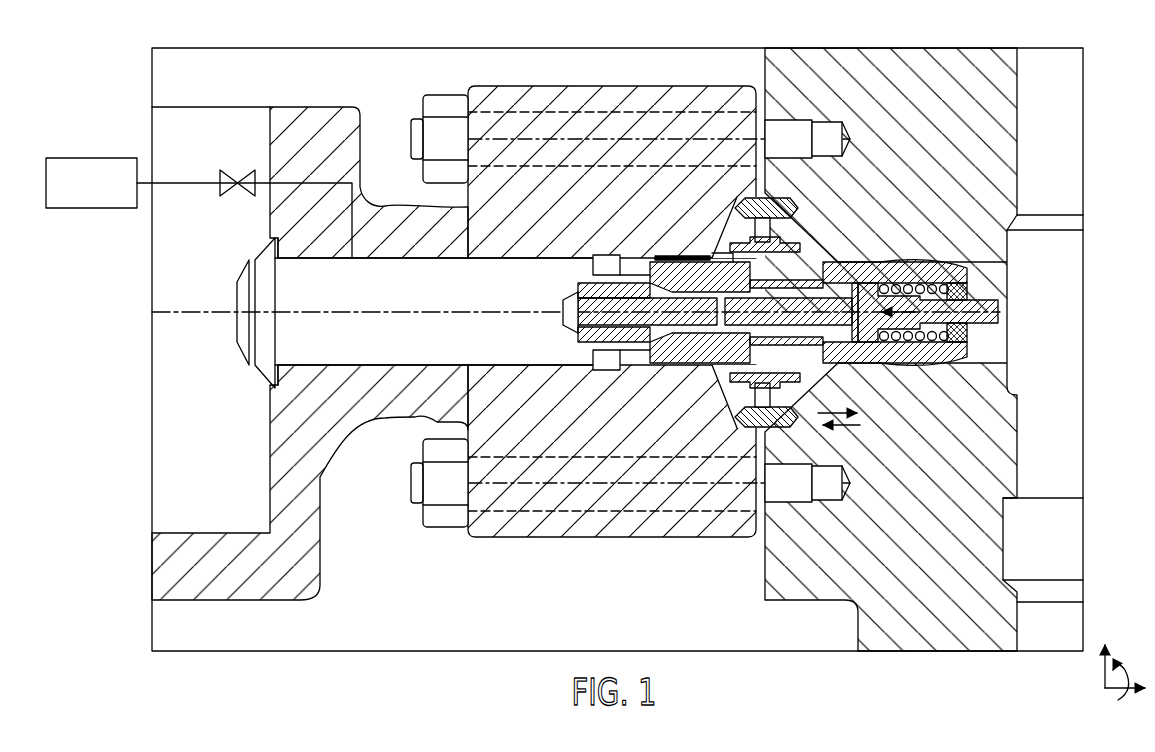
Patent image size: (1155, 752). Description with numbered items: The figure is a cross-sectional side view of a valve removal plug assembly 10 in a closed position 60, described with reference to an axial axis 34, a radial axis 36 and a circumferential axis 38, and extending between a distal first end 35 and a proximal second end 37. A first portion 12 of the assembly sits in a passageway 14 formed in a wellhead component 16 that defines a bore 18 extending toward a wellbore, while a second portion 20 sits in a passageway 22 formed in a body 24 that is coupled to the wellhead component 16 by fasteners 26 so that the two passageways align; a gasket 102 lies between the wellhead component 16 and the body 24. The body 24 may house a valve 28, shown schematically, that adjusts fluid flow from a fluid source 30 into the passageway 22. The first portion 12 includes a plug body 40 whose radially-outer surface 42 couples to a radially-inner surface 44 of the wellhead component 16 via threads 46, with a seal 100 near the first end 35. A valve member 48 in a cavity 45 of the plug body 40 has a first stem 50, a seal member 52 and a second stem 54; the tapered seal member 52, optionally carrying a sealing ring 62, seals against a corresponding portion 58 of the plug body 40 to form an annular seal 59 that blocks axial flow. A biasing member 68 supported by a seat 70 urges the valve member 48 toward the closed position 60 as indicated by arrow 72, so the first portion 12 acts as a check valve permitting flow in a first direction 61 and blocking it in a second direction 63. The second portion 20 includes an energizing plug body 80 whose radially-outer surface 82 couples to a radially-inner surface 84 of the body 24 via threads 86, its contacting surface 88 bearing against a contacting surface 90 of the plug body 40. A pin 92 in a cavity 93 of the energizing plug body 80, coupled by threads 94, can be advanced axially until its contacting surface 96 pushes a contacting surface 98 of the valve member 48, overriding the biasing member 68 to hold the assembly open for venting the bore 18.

The valve removal (VR) plug assembly 10 is at (893, 160).
The first portion 12 is at (897, 190).
The passageway 14 is at (965, 268).
The wellhead component 16 is at (903, 55).
The bore 18 is at (1058, 140).
The second portion 20 is at (655, 257).
The passageway 22 is at (486, 256).
The body 24 is at (368, 213).
The fasteners 26 is at (622, 112).
The valve 28 is at (245, 176).
The fluid source 30 is at (93, 157).
The axial axis 34 is at (1110, 692).
The first end 35 is at (1016, 300).
The radial axis 36 is at (1103, 676).
The second end 37 is at (570, 311).
The circumferential axis 38 is at (1126, 676).
The plug body 40 is at (850, 265).
The radially-outer surface 42 is at (900, 350).
The radially-inner surface 44 is at (882, 343).
The cavity 45 is at (927, 263).
The threads 46 is at (892, 264).
The valve member 48 is at (903, 343).
The first stem 50 is at (960, 315).
The seal member 52 is at (870, 344).
The second stem 54 is at (802, 326).
The corresponding portion 58 is at (833, 265).
The annular seal 59 is at (870, 262).
The closed position 60 is at (888, 135).
The first direction 61 is at (838, 410).
The sealing ring 62 is at (855, 342).
The second direction 63 is at (836, 426).
The biasing member 68 is at (948, 340).
The seat 70 is at (960, 290).
The arrow 72 is at (932, 352).
The energizing plug body 80 is at (676, 261).
The radially-outer surface 82 is at (682, 362).
The radially-inner surface 84 is at (713, 365).
The threads 86 is at (662, 342).
The contacting surface 88 is at (732, 262).
The contacting surface 90 is at (742, 250).
The pin 92 is at (600, 330).
The cavity 93 is at (726, 368).
The threads 94 is at (585, 295).
The contacting surface 96 is at (697, 276).
The contacting surface 98 is at (748, 322).
The seal 100 is at (940, 268).
The gasket 102 is at (776, 208).